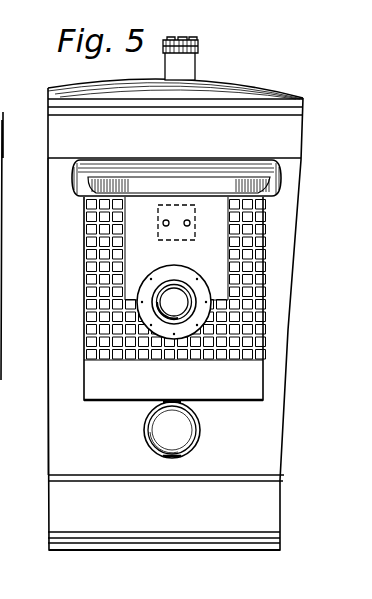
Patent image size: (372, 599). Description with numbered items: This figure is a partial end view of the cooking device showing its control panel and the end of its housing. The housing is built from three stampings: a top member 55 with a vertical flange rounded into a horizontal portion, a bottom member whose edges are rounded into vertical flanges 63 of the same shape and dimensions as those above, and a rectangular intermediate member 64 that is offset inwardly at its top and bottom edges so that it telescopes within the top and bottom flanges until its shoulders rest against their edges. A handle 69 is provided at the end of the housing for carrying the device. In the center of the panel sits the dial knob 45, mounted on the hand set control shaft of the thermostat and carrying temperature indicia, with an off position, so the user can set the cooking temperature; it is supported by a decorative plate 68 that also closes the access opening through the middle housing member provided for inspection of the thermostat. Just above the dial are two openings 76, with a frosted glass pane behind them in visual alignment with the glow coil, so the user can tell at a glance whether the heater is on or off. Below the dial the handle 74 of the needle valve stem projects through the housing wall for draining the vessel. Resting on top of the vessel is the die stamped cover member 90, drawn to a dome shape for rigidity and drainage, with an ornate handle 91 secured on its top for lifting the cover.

The dial knob 45 is at (157, 279).
The top member 55 is at (54, 137).
The vertical flanges 63 is at (0, 484).
The intermediate member 64 is at (48, 332).
The decorative plate 68 is at (250, 333).
The handles 69 is at (165, 174).
The handle 74 is at (189, 437).
The openings 76 is at (189, 225).
The cover member 90 is at (256, 83).
The handle 91 is at (199, 49).